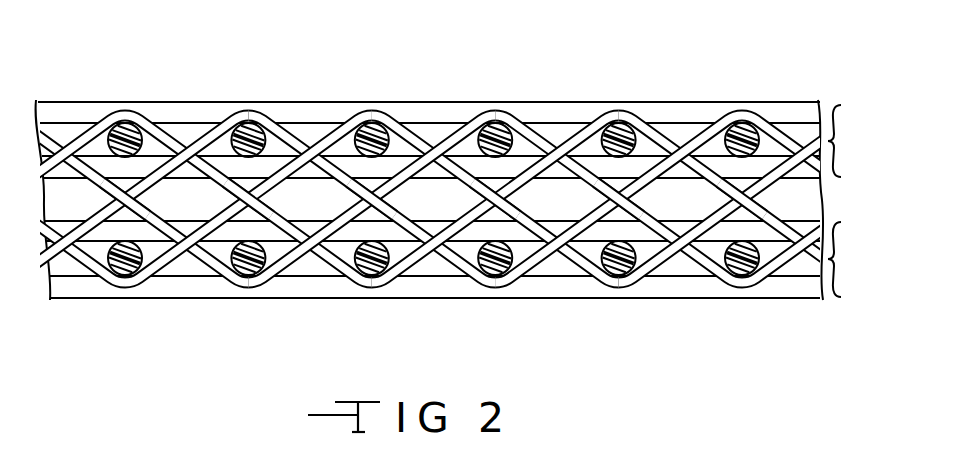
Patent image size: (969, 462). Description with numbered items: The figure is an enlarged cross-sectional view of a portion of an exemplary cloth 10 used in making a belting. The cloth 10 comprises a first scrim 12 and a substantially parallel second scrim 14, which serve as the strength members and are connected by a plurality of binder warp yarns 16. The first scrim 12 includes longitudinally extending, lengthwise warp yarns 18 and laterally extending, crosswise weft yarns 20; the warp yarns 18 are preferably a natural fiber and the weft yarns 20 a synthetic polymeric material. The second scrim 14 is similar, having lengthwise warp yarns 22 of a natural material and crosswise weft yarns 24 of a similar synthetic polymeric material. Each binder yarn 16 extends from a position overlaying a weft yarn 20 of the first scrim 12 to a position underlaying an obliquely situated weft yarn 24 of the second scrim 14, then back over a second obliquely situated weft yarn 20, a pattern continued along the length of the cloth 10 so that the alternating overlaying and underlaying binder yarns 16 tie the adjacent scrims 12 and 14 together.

The cloth 10 is at (484, 176).
The first scrim 12 is at (455, 140).
The second scrim 14 is at (462, 259).
The binder warp yarns 16 is at (501, 118).
The warp yarns 18 is at (408, 157).
The weft yarns 20 is at (255, 128).
The warp yarns 22 is at (415, 248).
The weft yarns 24 is at (254, 290).